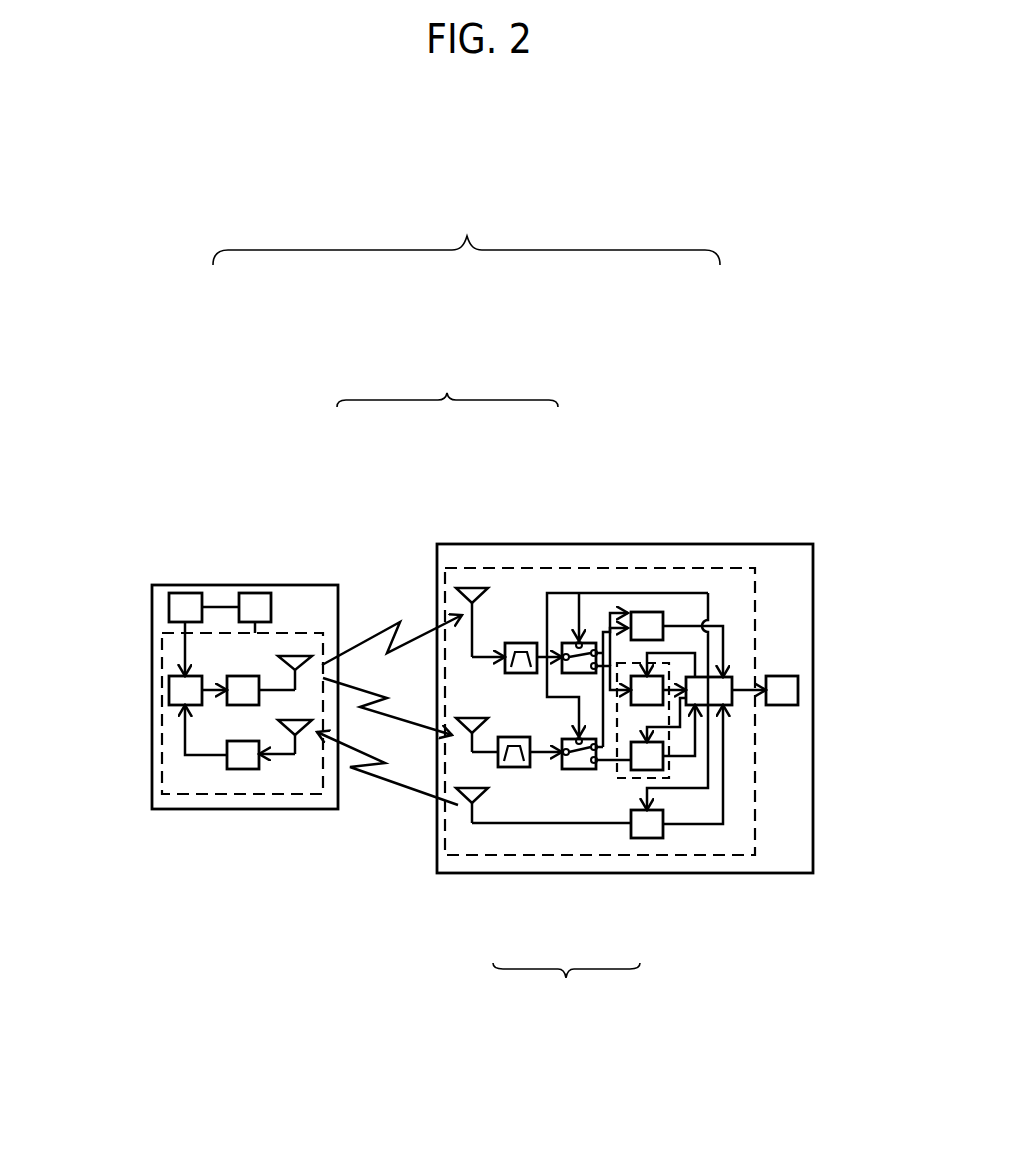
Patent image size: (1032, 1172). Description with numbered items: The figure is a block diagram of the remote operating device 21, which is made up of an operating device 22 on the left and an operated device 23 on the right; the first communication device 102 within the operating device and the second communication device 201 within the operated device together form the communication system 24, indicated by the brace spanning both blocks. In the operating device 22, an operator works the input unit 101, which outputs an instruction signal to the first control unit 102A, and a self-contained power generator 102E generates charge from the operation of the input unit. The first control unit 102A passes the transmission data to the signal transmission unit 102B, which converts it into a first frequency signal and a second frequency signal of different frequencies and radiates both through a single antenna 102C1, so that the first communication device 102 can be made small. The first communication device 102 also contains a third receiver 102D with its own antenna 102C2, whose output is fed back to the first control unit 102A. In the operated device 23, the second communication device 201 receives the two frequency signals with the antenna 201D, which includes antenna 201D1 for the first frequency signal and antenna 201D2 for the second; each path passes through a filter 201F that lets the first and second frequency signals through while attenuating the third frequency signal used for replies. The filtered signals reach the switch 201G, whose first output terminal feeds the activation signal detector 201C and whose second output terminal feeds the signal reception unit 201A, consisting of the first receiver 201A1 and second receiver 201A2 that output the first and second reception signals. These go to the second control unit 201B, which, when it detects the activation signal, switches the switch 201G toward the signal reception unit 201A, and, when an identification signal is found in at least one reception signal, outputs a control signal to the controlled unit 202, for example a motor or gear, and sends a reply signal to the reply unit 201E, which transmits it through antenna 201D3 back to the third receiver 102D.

The remote operating device 21 is at (765, 237).
The operating device 22 is at (303, 585).
The operated device 23 is at (762, 544).
The communication system 24 is at (466, 224).
The input unit 101 is at (177, 593).
The first communication device 102 is at (295, 633).
The first control unit 102A is at (169, 691).
The signal transmission unit 102B is at (244, 676).
The antenna 102C1 is at (302, 668).
The antenna 102C2 is at (287, 733).
The third receiver 102D is at (237, 770).
The power generator 102E is at (260, 593).
The second communication device 201 is at (716, 568).
The signal reception unit 201A is at (581, 840).
The first receiver 201A1 is at (644, 694).
The second receiver 201A2 is at (638, 760).
The second control unit 201B is at (718, 692).
The activation signal detector 201C is at (647, 620).
The antenna 201D is at (447, 385).
The antenna 201D1 is at (477, 588).
The antenna 201D2 is at (463, 718).
The antenna 201D3 is at (470, 788).
The reply unit 201E is at (655, 833).
The filter 201F is at (523, 737).
The switch 201G is at (578, 665).
The controlled unit 202 is at (792, 692).